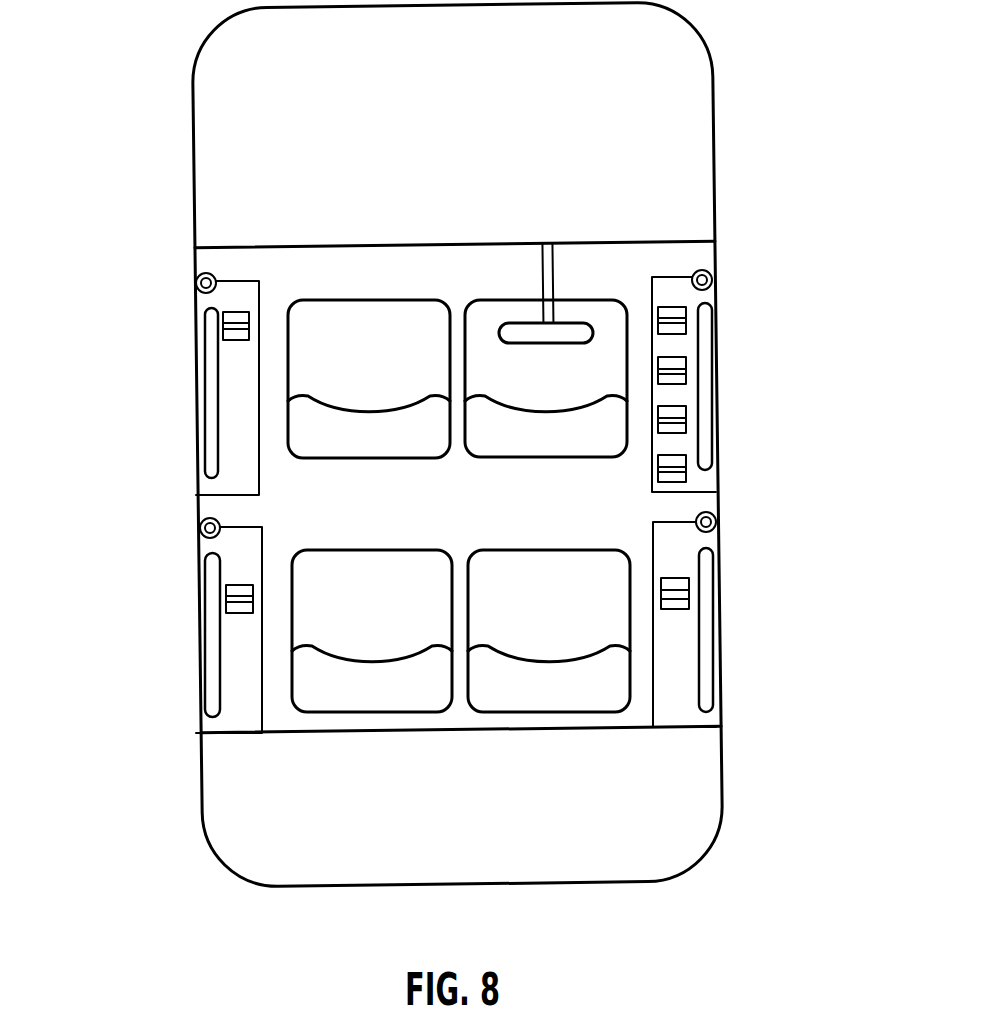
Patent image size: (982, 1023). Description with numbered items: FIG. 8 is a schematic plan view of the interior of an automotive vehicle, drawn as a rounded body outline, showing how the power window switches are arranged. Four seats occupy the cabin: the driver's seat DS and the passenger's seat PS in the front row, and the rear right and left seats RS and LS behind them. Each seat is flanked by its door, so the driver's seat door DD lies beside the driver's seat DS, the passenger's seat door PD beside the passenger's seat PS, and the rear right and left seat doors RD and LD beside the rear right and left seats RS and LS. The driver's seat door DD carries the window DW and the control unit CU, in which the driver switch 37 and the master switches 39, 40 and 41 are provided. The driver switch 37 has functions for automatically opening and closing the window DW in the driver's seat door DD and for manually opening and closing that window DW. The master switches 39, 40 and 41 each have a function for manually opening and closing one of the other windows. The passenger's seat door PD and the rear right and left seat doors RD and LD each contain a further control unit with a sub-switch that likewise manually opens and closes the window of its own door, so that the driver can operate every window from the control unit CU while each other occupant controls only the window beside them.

The passenger's seat door PD is at (146, 358).
The driver's seat door DD is at (740, 352).
The control unit CU is at (740, 377).
The driver switch 37 is at (681, 312).
The master switch 39 is at (681, 362).
The master switch 40 is at (681, 412).
The master switch 41 is at (681, 456).
The window DW is at (705, 394).
The passenger's seat PS is at (397, 440).
The driver's seat DS is at (562, 433).
The rear left seat LS is at (387, 693).
The rear right seat RS is at (565, 683).
The rear left seat door LD is at (147, 650).
The rear right seat door RD is at (785, 642).